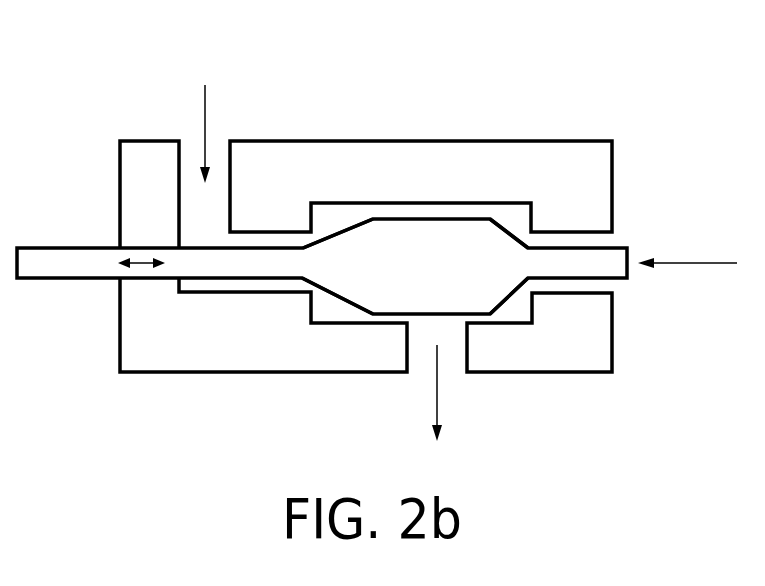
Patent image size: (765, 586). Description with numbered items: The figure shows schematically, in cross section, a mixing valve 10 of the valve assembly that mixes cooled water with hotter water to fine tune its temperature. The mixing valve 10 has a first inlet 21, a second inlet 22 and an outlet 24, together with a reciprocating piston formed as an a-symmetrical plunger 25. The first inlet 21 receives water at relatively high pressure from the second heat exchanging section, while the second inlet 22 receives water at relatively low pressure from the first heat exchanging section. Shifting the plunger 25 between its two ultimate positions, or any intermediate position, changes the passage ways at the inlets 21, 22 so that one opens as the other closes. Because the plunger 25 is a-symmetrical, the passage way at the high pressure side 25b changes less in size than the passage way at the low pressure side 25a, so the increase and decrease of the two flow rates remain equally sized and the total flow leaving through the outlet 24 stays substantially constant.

The mixing valve 10 is at (538, 90).
The first inlet 21 is at (183, 108).
The second inlet 22 is at (673, 245).
The outlet 24 is at (412, 432).
The plunger 25 is at (433, 276).
The low pressure side of the plunger 25a is at (517, 276).
The high pressure side of the plunger 25b is at (359, 276).